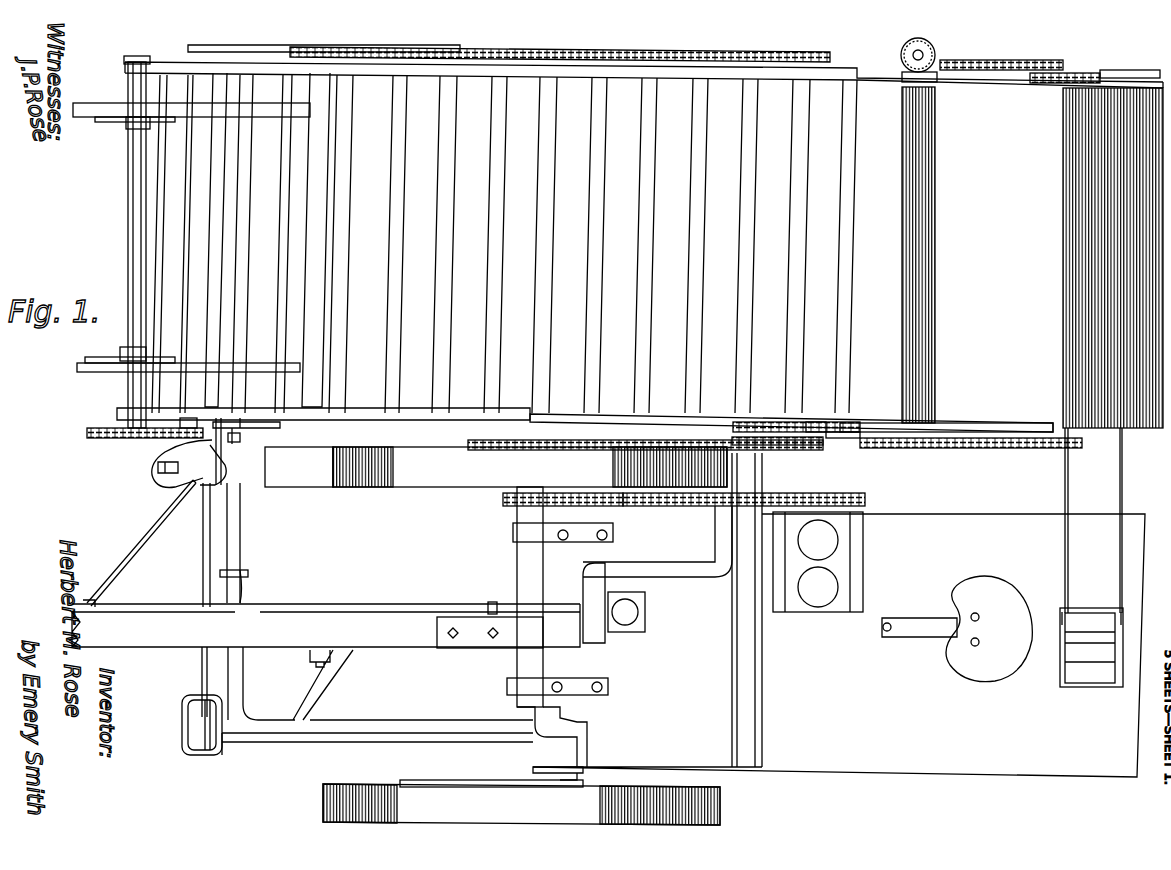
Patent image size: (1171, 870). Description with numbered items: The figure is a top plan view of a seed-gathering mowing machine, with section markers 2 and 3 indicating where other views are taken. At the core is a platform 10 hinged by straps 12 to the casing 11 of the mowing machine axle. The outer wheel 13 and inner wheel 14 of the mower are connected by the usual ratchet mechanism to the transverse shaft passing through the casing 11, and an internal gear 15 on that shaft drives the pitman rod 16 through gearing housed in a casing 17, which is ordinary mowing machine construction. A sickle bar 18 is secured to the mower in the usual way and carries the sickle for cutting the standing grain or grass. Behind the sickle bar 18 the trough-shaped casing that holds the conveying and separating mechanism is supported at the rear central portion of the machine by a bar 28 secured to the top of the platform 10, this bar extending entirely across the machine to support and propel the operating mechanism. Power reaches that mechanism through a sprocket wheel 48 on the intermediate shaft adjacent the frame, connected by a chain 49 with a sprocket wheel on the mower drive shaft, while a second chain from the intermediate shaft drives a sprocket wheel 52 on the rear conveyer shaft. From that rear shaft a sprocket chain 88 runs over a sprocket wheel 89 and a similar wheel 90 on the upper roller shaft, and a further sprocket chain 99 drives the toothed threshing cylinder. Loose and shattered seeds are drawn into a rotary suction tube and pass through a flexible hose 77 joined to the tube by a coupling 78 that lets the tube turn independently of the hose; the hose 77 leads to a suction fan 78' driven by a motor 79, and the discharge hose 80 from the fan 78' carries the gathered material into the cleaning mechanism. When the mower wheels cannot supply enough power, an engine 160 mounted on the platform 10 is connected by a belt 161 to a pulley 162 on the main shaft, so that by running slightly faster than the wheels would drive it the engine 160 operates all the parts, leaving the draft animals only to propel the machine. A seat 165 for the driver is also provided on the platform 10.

The section line 2- 2 is at (130, 445).
The section line 3- 3 is at (180, 237).
The platform 10 is at (924, 762).
The casing 11 is at (525, 663).
The straps 12 is at (552, 540).
The outer wheel 13 is at (402, 790).
The inner wheel 14 is at (447, 470).
The internal gear 15 is at (468, 780).
The pitman rod 16 is at (200, 668).
The casing 17 is at (568, 722).
The sickle bar 18 is at (242, 428).
The bar 28 is at (750, 703).
The sprocket wheel 48 is at (800, 450).
The chain 49 is at (640, 432).
The sprocket wheel 52 is at (823, 441).
The flexible hose 77 is at (337, 603).
The coupling 78 is at (221, 481).
The suction fan 78' is at (622, 617).
The motor 79 is at (648, 603).
The discharge hose 80 is at (665, 571).
The sprocket chain 88 is at (850, 440).
The sprocket wheel 89 is at (733, 425).
The sprocket wheel 90 is at (957, 433).
The sprocket chain 99 is at (1000, 448).
The engine 160 is at (863, 552).
The belt 161 is at (692, 510).
The pulley 162 is at (512, 506).
The seat 165 is at (988, 595).